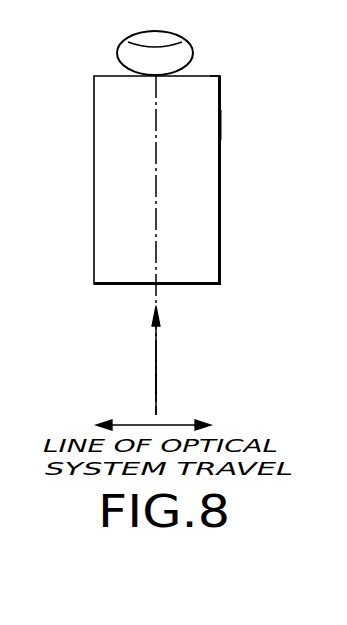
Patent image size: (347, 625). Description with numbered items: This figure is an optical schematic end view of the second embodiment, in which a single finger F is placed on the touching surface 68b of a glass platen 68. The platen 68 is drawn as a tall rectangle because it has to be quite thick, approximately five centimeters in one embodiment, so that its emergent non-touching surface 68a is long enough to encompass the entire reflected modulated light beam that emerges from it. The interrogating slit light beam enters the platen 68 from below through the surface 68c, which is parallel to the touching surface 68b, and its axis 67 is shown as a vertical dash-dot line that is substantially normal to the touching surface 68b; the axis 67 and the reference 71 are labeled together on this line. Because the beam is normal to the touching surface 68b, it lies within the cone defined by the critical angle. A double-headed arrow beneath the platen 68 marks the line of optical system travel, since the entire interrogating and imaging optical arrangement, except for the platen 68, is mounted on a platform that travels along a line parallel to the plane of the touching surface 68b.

The finger F is at (178, 54).
The glass platen 68 is at (201, 172).
The non-touching surface 68a is at (204, 128).
The touching surface 68b is at (209, 76).
The entry surface 68c is at (196, 285).
The axis of the interrogating light beam 67 is at (157, 352).
The optical axis 71 is at (160, 352).